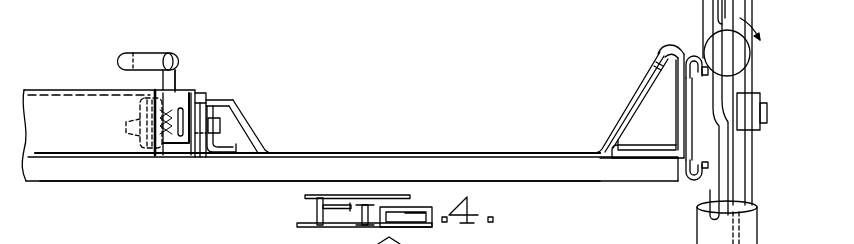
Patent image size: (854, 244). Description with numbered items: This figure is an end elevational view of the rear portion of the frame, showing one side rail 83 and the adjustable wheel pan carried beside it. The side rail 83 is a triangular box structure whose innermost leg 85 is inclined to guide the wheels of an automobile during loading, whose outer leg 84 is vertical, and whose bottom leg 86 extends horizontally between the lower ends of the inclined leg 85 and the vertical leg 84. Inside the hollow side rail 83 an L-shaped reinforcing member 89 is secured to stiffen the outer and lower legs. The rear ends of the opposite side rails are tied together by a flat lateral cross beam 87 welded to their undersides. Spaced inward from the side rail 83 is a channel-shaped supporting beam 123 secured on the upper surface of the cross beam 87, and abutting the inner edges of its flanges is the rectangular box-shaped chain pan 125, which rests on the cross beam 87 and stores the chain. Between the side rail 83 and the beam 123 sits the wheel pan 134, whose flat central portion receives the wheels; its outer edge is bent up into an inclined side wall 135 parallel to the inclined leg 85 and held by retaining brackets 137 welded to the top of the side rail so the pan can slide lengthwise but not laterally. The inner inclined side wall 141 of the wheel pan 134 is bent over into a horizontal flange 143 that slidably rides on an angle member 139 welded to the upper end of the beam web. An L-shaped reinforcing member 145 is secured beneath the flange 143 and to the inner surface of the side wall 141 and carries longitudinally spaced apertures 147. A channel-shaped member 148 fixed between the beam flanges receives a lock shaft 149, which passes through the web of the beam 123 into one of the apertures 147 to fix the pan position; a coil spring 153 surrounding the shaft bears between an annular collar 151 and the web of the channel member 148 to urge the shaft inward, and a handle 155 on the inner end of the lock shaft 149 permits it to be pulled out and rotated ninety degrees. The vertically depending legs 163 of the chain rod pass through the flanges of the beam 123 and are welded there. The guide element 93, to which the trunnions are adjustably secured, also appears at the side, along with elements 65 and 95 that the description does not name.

The chain pan 125 is at (42, 93).
The wheel pan 134 is at (460, 155).
The coil spring 153 is at (157, 80).
The channel-shaped supporting beam 123 is at (186, 116).
The annular collar 151 is at (181, 108).
The vertically depending legs 163 is at (178, 92).
The handle 155 is at (140, 125).
The channel-shaped member 148 is at (140, 144).
The angle member 139 is at (200, 100).
The L-shaped reinforcing member 145 is at (217, 150).
The horizontal flange 143 is at (215, 107).
The inner inclined side wall 141 is at (245, 118).
The apertures 147 is at (222, 133).
The lock shaft 149 is at (200, 143).
The lateral cross beam 87 is at (253, 173).
The inclined side wall 135 is at (627, 105).
The retaining brackets 137 is at (670, 47).
The innermost leg 85 is at (658, 62).
The bracket 65 is at (697, 133).
The bottom leg 86 is at (630, 162).
The side rail 83 is at (652, 160).
The L-shaped reinforcing member 89 is at (680, 150).
The guide element 93 is at (679, 172).
The hook 95 is at (703, 72).
The outer leg 84 is at (688, 62).